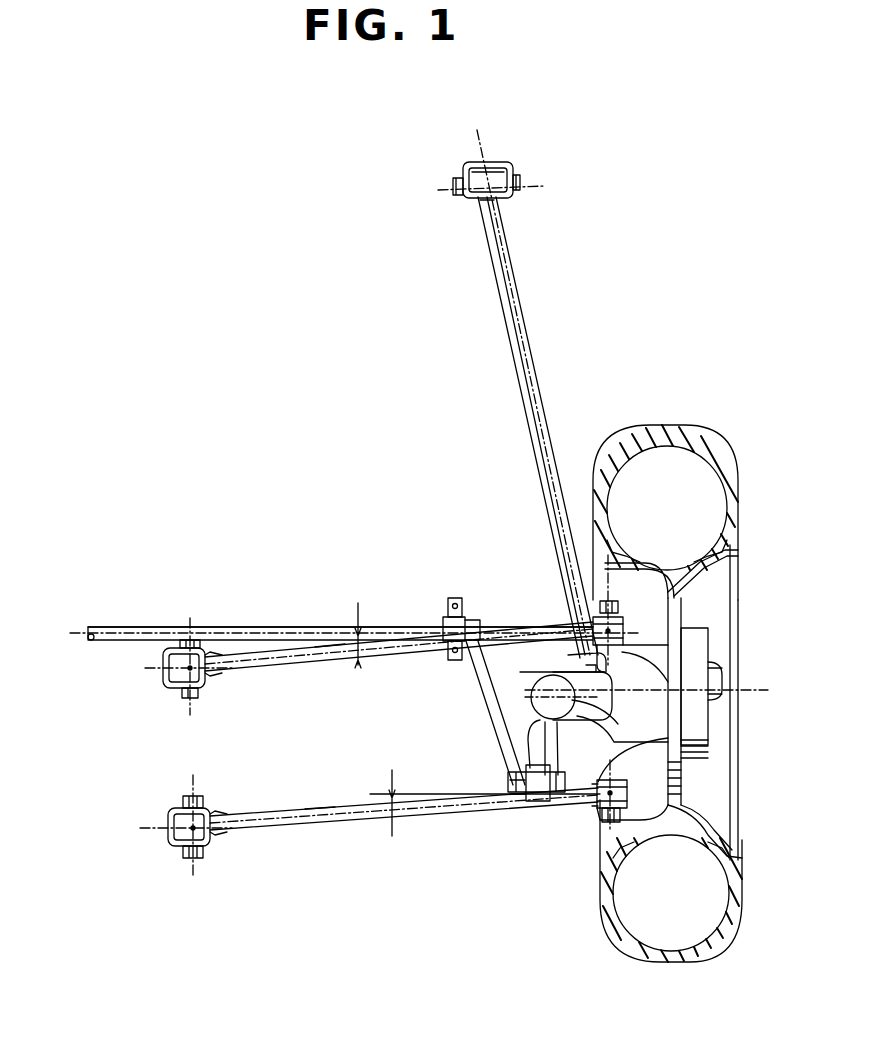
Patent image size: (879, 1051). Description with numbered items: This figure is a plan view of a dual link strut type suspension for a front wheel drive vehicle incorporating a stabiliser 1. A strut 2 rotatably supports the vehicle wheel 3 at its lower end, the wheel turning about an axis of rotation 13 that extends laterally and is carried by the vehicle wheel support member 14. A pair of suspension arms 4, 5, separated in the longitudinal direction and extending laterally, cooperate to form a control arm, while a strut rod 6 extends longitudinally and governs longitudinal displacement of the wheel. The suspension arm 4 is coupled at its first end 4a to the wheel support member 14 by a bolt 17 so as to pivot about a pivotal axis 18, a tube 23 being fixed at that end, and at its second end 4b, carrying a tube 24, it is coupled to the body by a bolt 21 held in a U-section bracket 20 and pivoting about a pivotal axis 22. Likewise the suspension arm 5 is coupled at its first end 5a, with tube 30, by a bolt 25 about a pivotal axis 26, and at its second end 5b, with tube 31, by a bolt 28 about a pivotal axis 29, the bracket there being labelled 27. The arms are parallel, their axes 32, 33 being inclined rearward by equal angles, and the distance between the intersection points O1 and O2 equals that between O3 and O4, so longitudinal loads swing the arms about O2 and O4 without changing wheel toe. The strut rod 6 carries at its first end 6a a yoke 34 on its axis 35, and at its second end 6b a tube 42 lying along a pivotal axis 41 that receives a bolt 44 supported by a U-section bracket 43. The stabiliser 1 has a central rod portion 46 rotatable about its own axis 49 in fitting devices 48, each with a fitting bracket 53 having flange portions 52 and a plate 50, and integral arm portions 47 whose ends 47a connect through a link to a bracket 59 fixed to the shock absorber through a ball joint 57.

The stabiliser 1 is at (156, 613).
The strut 2 is at (538, 682).
The vehicle wheel 3 is at (688, 440).
The suspension arm 4 is at (297, 668).
The first end of suspension arm 4a is at (570, 620).
The second end of suspension arm 4b is at (228, 675).
The suspension arm 5 is at (348, 830).
The first end of suspension arm 5a is at (600, 812).
The second end of suspension arm 5b is at (222, 832).
The strut rod 6 is at (512, 266).
The first end of strut rod 6a is at (572, 664).
The second end of strut rod 6b is at (508, 218).
The axis of rotation 13 is at (760, 690).
The vehicle wheel support member 14 is at (705, 727).
The bolt 17 is at (598, 604).
The pivotal axis 18 is at (612, 658).
The U-section bracket 20 is at (164, 682).
The bolt 21 is at (200, 640).
The pivotal axis 22 is at (196, 704).
The tube 23 is at (615, 608).
The tube 24 is at (160, 662).
The bolt 25 is at (606, 822).
The pivotal axis 26 is at (562, 770).
The inner bracket of lower link 27 is at (172, 842).
The bolt 28 is at (200, 856).
The pivotal axis 29 is at (190, 862).
The tube 30 is at (622, 798).
The tube 31 is at (206, 818).
The axis of suspension arm 32 is at (332, 668).
The axis of suspension arm 33 is at (320, 810).
The yoke 34 is at (608, 708).
The axis of strut rod 35 is at (532, 392).
The pivotal axis 41 is at (442, 186).
The tube 42 is at (482, 200).
The U-section bracket 43 is at (484, 163).
The bolt 44 is at (458, 202).
The central rod portion 46 is at (260, 626).
The arm portion 47 is at (490, 695).
The end of arm portion 47a is at (513, 768).
The fitting device 48 is at (432, 611).
The axis of central rod portion 49 is at (84, 630).
The clamp plate 50 is at (465, 622).
The flange portion 52 is at (454, 660).
The fitting bracket 53 is at (456, 598).
The ball joint 57 is at (534, 805).
The bracket 59 is at (560, 748).
The point of intersection O1 is at (624, 633).
The point of intersection O2 is at (188, 672).
The point of intersection O3 is at (630, 790).
The point of intersection O4 is at (190, 828).